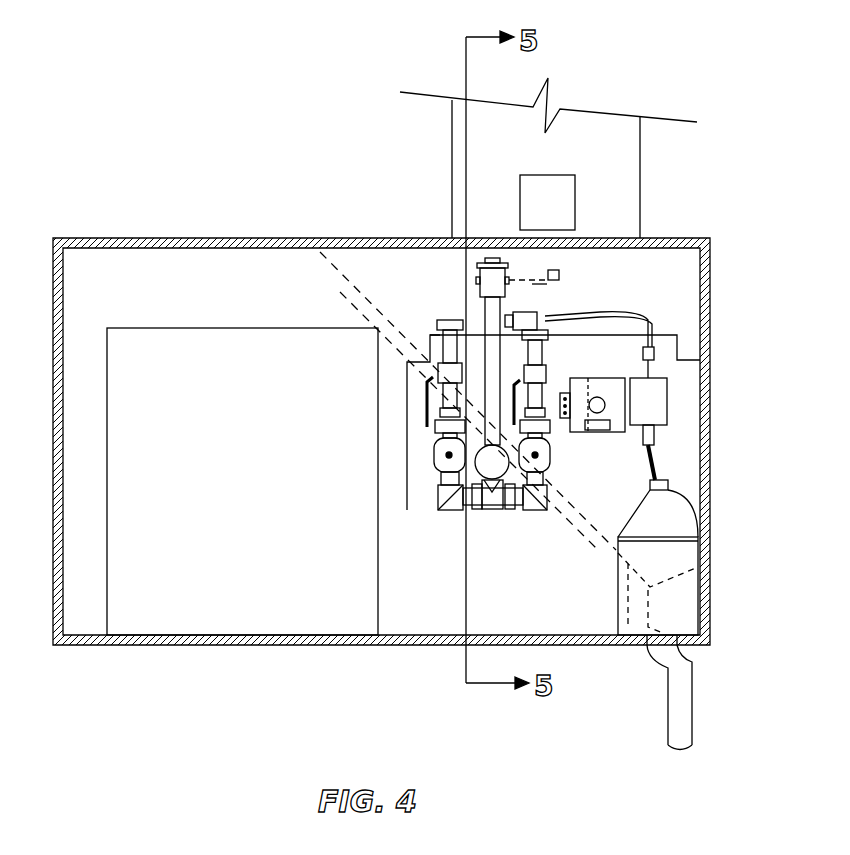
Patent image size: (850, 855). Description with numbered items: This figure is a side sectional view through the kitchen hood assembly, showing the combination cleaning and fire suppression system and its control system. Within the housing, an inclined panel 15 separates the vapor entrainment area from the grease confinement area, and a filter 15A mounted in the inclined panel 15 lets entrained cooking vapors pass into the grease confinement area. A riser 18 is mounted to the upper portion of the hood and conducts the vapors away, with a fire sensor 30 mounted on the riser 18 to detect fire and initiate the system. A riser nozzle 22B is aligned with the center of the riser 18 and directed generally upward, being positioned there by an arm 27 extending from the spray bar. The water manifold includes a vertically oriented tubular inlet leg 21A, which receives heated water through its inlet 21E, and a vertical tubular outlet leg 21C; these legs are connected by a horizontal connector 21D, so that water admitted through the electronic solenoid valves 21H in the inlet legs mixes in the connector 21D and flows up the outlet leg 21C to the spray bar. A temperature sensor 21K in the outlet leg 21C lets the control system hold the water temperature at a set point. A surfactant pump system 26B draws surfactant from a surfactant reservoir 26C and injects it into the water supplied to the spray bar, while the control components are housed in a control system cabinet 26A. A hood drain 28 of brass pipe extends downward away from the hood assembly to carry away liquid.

The inclined panel 15 is at (340, 273).
The filter 15A is at (358, 310).
The riser 18 is at (598, 140).
The fire sensor 30 is at (560, 202).
The riser nozzle 22B is at (555, 273).
The arm 27 is at (548, 285).
The vertical tubular outlet leg 21C is at (490, 358).
The surfactant pump system 26B is at (650, 403).
The surfactant reservoir 26C is at (673, 562).
The hood drain 28 is at (682, 708).
The control system cabinet 26A is at (240, 578).
The inlet 21E is at (440, 320).
The vertically-oriented tubular inlet leg 21A is at (433, 325).
The electronic solenoid valves 21H is at (522, 440).
The temperature sensor 21K is at (492, 467).
The horizontal connector 21D is at (490, 508).